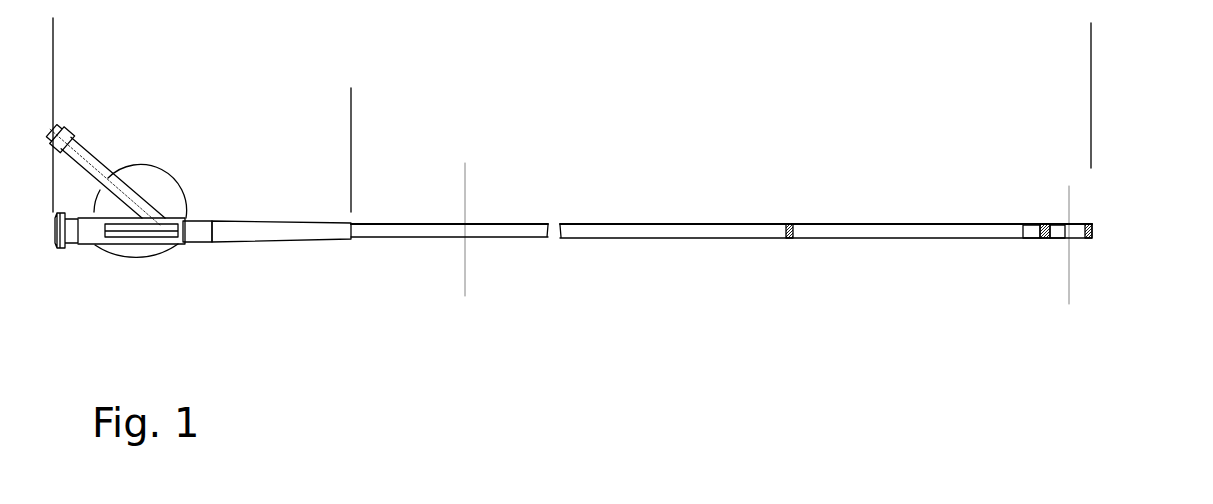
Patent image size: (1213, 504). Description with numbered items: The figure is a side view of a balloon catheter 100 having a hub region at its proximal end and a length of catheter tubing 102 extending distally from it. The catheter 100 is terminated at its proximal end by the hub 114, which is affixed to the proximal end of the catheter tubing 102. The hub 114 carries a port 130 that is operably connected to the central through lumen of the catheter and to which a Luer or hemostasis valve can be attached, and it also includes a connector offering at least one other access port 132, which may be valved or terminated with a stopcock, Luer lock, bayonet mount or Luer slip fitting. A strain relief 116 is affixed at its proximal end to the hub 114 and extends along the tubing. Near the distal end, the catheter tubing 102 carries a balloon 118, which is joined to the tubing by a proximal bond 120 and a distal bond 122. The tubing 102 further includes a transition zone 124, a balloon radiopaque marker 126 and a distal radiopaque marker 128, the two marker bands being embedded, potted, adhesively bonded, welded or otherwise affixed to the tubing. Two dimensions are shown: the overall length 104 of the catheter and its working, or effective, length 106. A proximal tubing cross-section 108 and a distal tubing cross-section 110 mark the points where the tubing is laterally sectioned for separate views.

The balloon catheter 100 is at (614, 219).
The catheter tubing 102 is at (628, 224).
The overall length 104 is at (1089, 31).
The working length 106 is at (1089, 94).
The proximal tubing cross-section 108 is at (463, 165).
The distal tubing cross-section 110 is at (1078, 190).
The hub 114 is at (133, 229).
The strain relief 116 is at (273, 241).
The balloon 118 is at (1023, 224).
The proximal bond 120 is at (1030, 224).
The distal bond 122 is at (1060, 239).
The transition zone 124 is at (790, 225).
The balloon radiopaque marker 126 is at (1046, 224).
The distal radiopaque marker 128 is at (1092, 229).
The port 130 is at (60, 246).
The access port 132 is at (90, 140).